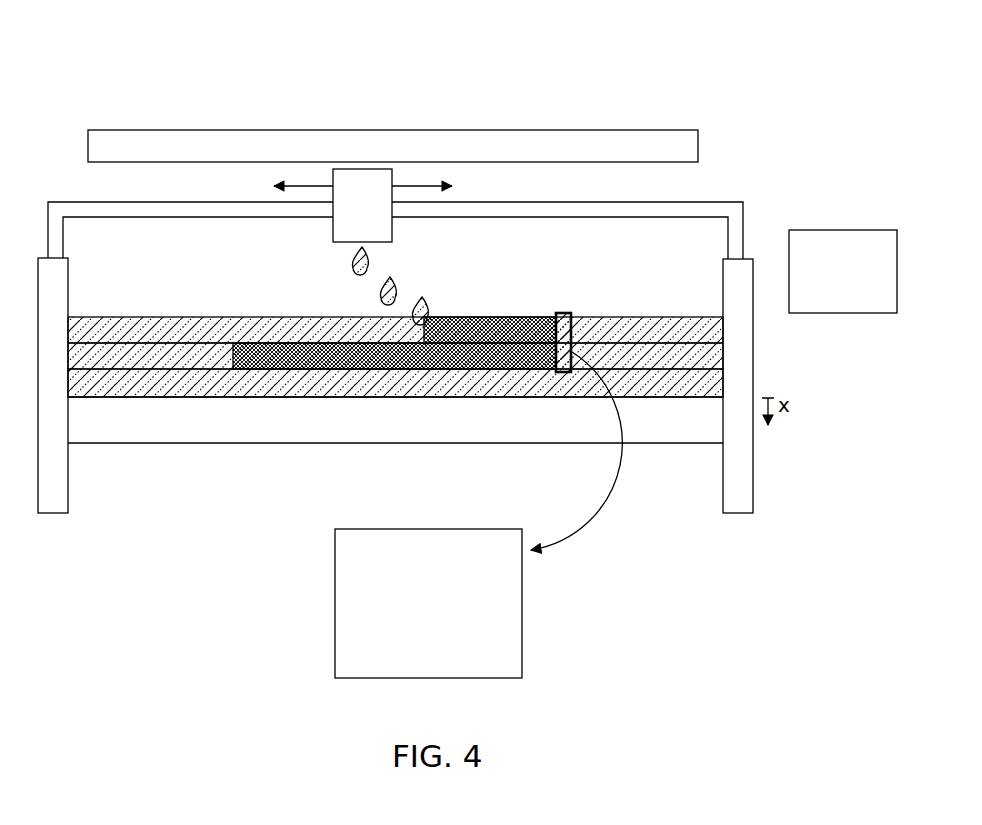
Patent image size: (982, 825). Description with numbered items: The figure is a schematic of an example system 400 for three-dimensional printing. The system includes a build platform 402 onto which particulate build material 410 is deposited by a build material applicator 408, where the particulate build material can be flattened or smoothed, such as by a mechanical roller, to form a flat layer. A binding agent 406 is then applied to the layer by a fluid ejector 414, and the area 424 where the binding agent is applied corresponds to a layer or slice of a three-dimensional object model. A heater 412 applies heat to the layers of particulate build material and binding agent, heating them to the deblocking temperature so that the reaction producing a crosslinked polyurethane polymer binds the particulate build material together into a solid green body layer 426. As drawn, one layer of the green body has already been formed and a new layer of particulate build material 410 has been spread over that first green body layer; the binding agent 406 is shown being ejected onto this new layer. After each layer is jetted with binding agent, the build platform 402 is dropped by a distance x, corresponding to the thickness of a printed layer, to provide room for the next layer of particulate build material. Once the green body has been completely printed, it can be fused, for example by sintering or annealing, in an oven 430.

The system for three-dimensional printing 400 is at (132, 44).
The build platform 402 is at (561, 409).
The binding agent 406 is at (352, 262).
The build material applicator 408 is at (692, 300).
The particulate build material 410 is at (137, 348).
The heater 412 is at (393, 146).
The fluid ejector 414 is at (363, 205).
The area where the binding agent is applied 424 is at (467, 330).
The solid green body layer 426 is at (359, 356).
The oven 430 is at (478, 495).